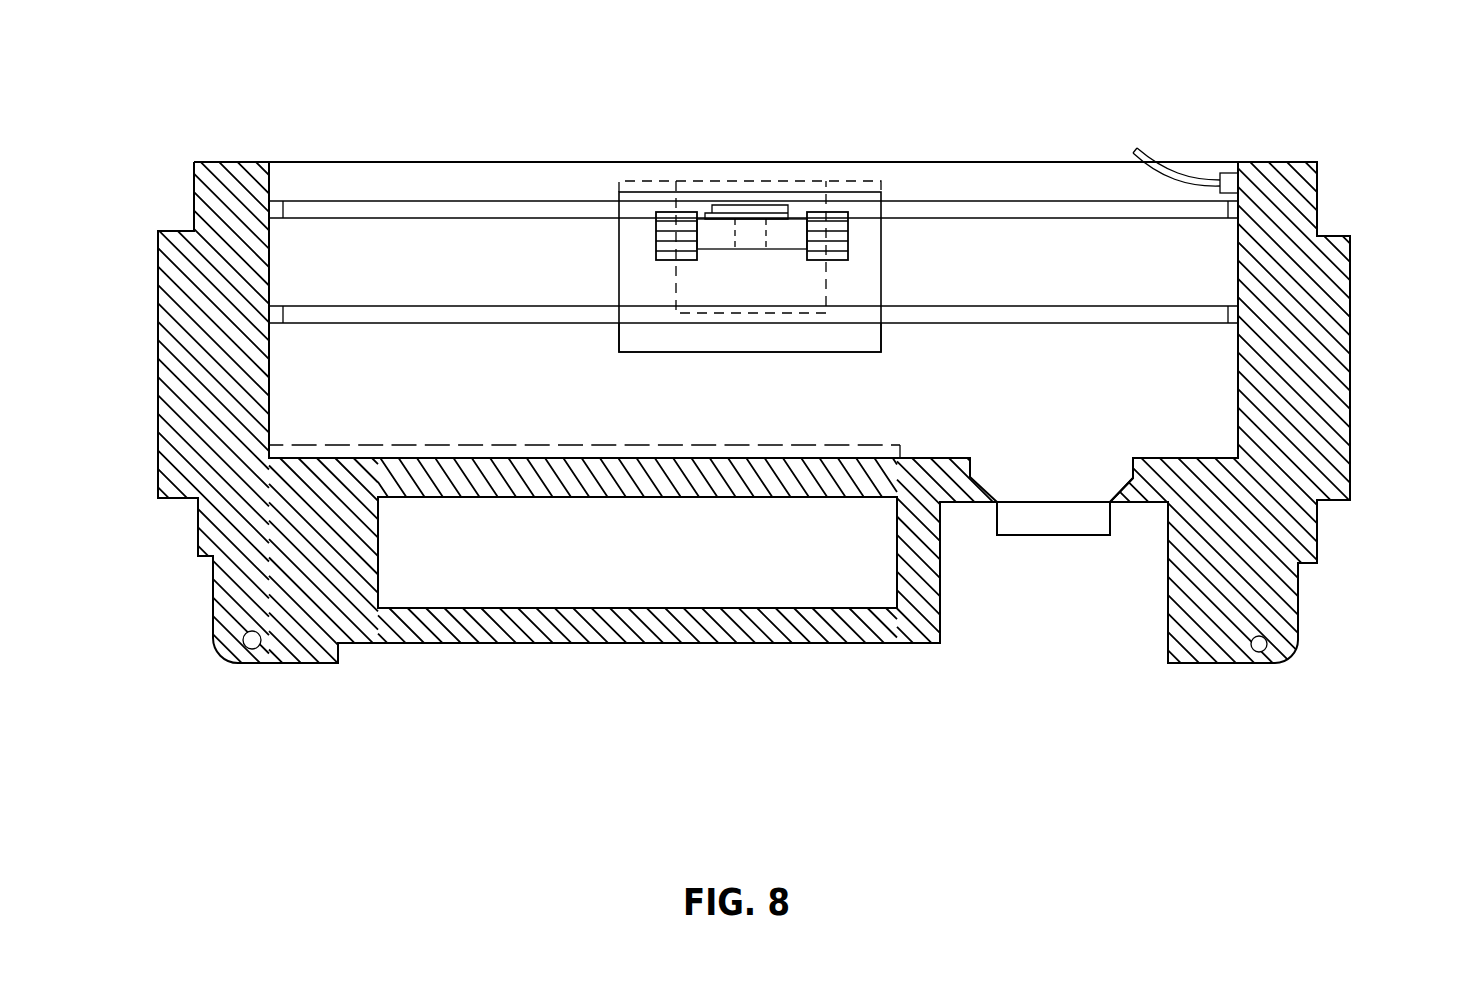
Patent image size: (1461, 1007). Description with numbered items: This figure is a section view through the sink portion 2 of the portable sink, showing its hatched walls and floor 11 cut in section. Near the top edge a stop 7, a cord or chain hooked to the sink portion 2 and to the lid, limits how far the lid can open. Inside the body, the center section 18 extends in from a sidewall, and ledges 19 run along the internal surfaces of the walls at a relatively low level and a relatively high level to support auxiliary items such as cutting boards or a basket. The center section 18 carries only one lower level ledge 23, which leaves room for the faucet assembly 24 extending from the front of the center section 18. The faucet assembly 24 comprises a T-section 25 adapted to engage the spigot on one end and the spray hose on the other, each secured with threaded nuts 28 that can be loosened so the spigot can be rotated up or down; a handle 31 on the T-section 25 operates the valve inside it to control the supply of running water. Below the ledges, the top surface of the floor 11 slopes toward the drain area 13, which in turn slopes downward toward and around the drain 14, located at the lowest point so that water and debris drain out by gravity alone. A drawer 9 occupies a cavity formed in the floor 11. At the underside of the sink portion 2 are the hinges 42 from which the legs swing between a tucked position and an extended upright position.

The sink portion 2 is at (1327, 382).
The stop 7 is at (1147, 150).
The drawer 9 is at (637, 552).
The floor 11 is at (917, 440).
The drain area 13 is at (1146, 457).
The drain 14 is at (1078, 538).
The center section 18 is at (883, 291).
The ledges 19 is at (452, 300).
The lower level ledge 23 is at (847, 324).
The faucet assembly 24 is at (728, 180).
The T-section 25 is at (793, 233).
The threaded nuts 28 is at (655, 243).
The handle 31 is at (746, 203).
The hinge 42 is at (253, 651).